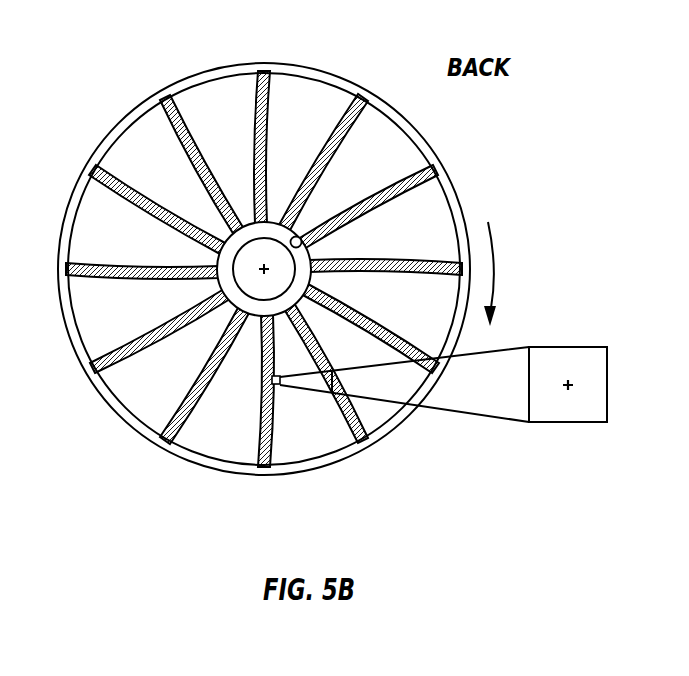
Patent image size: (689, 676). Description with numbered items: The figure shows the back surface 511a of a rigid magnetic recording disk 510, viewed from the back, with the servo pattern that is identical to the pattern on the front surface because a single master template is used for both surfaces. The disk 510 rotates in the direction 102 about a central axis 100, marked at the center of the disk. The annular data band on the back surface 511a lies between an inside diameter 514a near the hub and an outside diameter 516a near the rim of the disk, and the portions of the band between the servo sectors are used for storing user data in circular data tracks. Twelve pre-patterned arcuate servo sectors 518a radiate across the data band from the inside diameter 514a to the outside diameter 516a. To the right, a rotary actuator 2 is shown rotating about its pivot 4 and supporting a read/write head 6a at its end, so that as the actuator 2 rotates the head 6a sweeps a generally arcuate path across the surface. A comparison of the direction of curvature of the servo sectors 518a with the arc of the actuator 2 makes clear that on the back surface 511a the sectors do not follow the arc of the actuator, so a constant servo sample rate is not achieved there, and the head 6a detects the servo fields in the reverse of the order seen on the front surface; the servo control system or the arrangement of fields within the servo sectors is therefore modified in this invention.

The disk 510 is at (92, 158).
The outside diameter 516a is at (223, 70).
The arcuate servo sectors 518a is at (253, 270).
The back surface 511a is at (144, 174).
The central axis 100 is at (263, 269).
The inside diameter 514a is at (303, 246).
The direction of rotation 102 is at (497, 294).
The read/write head 6a is at (273, 386).
The rotary actuator 2 is at (581, 351).
The pivot 4 is at (571, 390).